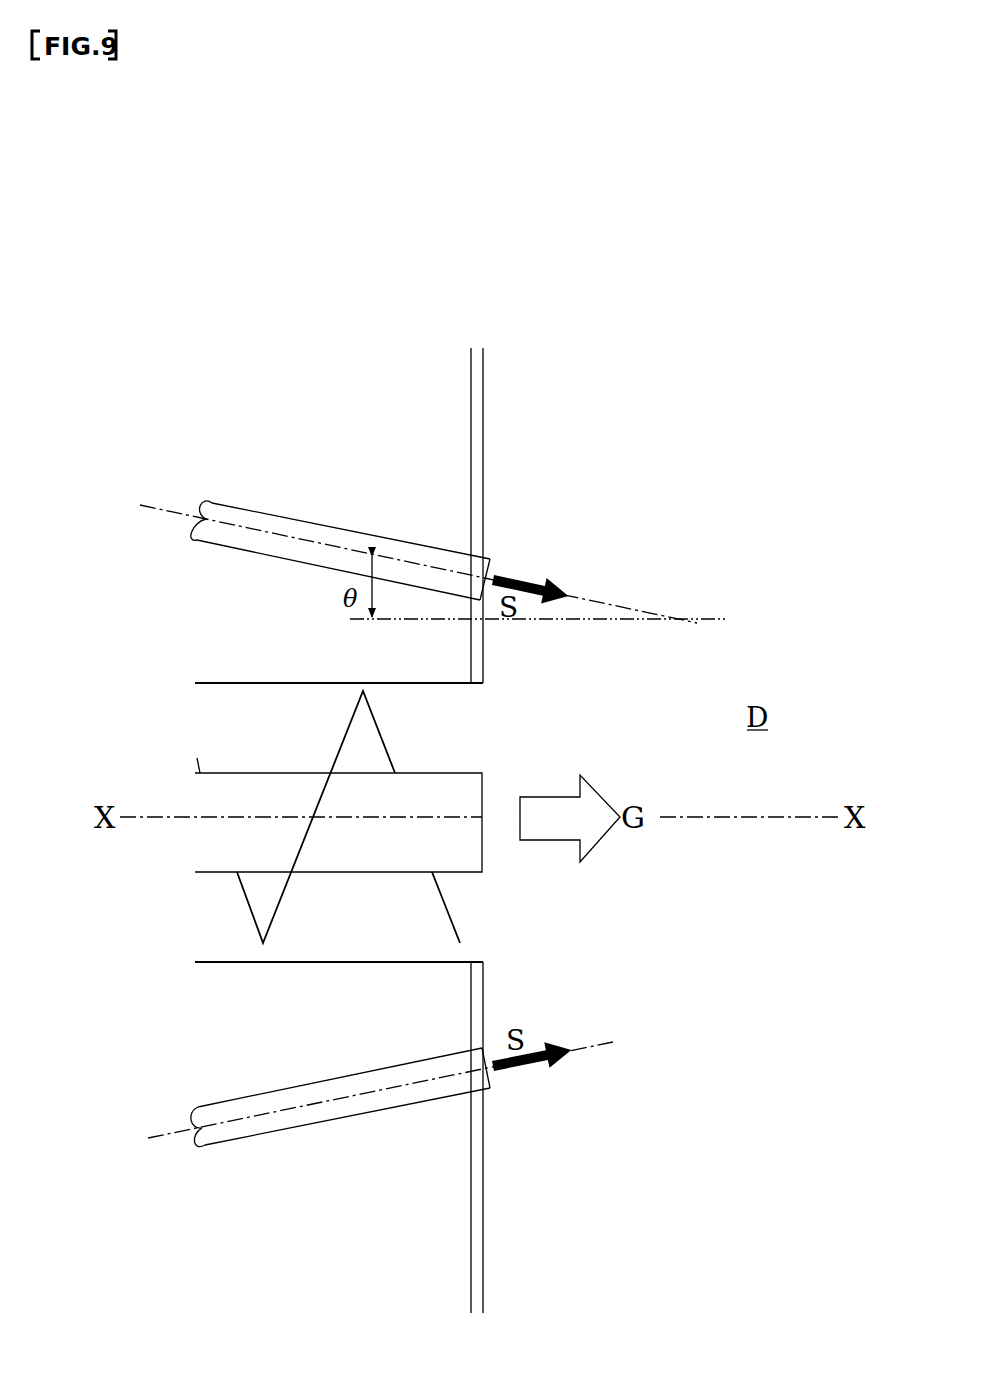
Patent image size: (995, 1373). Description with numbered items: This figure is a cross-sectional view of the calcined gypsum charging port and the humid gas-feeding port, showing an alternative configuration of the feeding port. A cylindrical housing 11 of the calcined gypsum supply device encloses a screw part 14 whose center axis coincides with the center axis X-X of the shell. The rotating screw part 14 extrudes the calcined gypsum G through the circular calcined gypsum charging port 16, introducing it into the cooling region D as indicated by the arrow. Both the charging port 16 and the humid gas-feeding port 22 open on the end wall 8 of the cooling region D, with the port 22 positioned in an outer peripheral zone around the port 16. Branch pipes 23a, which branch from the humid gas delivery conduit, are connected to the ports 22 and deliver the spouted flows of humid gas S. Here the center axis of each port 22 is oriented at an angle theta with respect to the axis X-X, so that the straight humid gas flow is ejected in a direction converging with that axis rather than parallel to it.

The end wall 8 is at (483, 1263).
The cylindrical housing 11 is at (226, 683).
The screw part 14 is at (246, 800).
The calcined gypsum charging port 16 is at (487, 730).
The humid gas-feeding port 22 is at (503, 568).
The branch pipe 23a is at (261, 518).